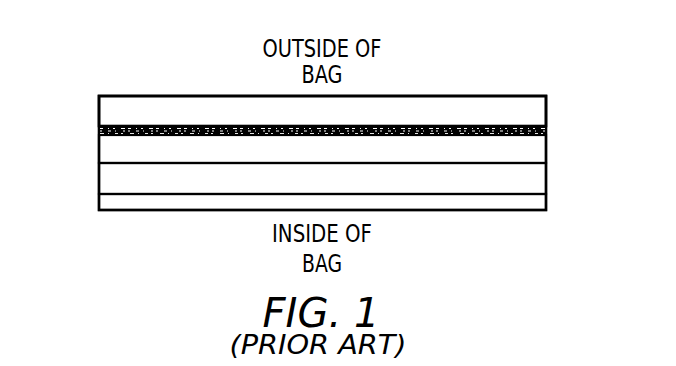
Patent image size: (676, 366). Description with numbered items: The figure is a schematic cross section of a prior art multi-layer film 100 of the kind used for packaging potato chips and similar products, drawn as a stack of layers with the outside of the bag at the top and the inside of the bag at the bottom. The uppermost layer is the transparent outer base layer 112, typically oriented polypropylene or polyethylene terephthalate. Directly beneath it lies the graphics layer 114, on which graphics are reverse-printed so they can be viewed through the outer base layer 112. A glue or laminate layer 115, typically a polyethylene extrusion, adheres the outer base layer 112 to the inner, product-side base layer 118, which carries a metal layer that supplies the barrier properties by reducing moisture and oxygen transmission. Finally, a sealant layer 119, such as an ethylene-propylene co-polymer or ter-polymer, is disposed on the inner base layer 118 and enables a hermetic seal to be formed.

The multi-layer film 100 is at (112, 72).
The outer base layer 112 is at (494, 95).
The graphics layer 114 is at (99, 131).
The glue or laminate layer 115 is at (547, 146).
The inner base layer 118 is at (547, 175).
The sealant layer 119 is at (547, 207).